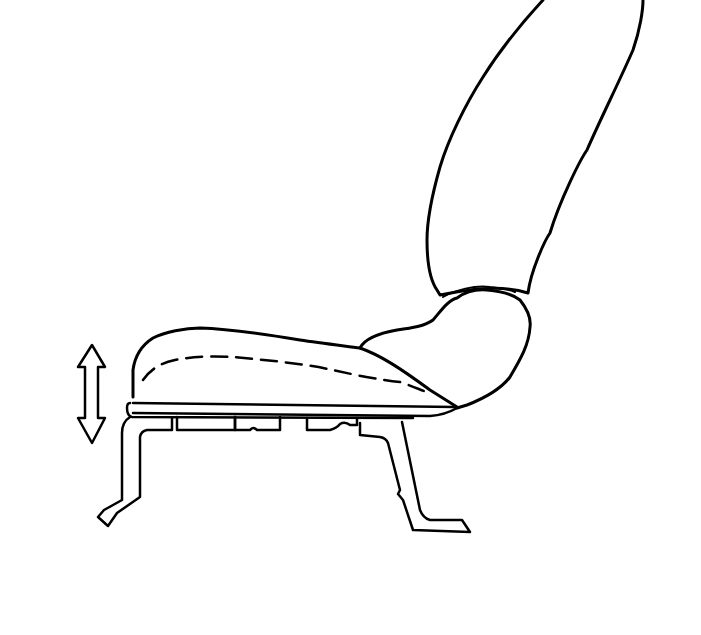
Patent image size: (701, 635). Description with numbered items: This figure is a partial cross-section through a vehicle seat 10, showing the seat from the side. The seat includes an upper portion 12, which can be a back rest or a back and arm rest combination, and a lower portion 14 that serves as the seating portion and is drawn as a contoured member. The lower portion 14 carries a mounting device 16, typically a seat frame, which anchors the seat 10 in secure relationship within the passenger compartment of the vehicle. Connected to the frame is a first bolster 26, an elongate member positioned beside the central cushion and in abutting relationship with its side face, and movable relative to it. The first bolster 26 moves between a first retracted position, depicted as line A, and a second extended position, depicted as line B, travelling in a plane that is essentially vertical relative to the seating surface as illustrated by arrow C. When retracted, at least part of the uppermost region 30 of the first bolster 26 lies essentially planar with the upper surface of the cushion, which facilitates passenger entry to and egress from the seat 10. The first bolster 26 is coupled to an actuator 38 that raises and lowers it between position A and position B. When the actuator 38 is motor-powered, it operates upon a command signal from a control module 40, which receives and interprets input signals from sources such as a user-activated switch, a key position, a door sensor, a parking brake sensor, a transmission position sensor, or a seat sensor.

The vehicle seat 10 is at (404, 86).
The upper portion 12 is at (542, 153).
The lower portion 14 is at (495, 385).
The mounting device 16 is at (418, 478).
The first bolster 26 is at (168, 350).
The uppermost region 30 is at (250, 330).
The actuator 38 is at (258, 431).
The control module 40 is at (202, 431).
The first retracted position A is at (305, 367).
The second extended position B is at (202, 330).
The arrow of bolster movement C is at (83, 393).